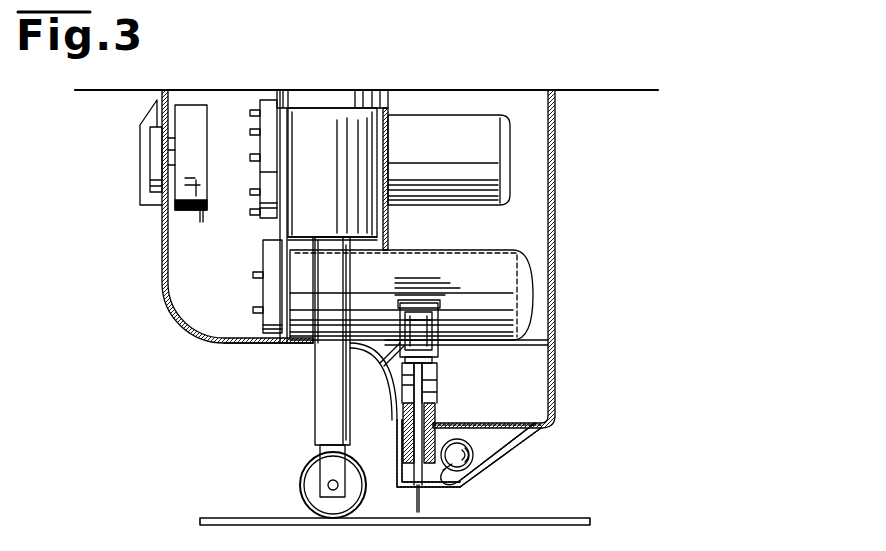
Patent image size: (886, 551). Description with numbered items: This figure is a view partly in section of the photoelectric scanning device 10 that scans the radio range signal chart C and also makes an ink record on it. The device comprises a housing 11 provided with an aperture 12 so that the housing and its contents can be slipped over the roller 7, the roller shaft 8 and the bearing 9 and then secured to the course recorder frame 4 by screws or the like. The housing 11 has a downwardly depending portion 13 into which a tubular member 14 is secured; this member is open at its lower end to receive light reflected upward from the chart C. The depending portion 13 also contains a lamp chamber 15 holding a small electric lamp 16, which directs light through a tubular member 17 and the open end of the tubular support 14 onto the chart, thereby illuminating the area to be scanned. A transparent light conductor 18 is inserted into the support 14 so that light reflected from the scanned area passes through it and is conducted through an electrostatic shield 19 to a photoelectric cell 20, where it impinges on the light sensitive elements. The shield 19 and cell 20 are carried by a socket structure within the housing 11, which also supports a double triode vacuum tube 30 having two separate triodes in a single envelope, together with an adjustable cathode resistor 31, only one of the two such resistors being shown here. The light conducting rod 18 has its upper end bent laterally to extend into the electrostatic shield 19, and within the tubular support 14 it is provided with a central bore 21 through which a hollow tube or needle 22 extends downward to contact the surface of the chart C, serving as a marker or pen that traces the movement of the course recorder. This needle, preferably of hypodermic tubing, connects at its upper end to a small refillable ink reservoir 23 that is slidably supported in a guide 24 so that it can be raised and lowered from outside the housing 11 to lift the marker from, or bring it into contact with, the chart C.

The course recorder frame 4 is at (596, 92).
The roller 7 is at (298, 478).
The roller shaft 8 is at (314, 411).
The bearing 9 is at (322, 110).
The scanning device 10 is at (153, 268).
The housing 11 is at (228, 346).
The aperture 12 is at (302, 347).
The downwardly depending portion 13 is at (396, 460).
The tubular member 14 is at (437, 420).
The lamp chamber 15 is at (500, 457).
The electric lamp 16 is at (470, 448).
The tubular member 17 is at (452, 484).
The transparent light conductor 18 is at (395, 425).
The electrostatic shield 19 is at (455, 238).
The photoelectric cell 20 is at (488, 250).
The central bore 21 is at (437, 405).
The hollow tube or needle 22 is at (412, 484).
The ink reservoir 23 is at (440, 338).
The guide 24 is at (435, 352).
The double triode vacuum tube 30 is at (478, 118).
The adjustable cathode resistor 31 is at (200, 144).
The chart C is at (528, 518).